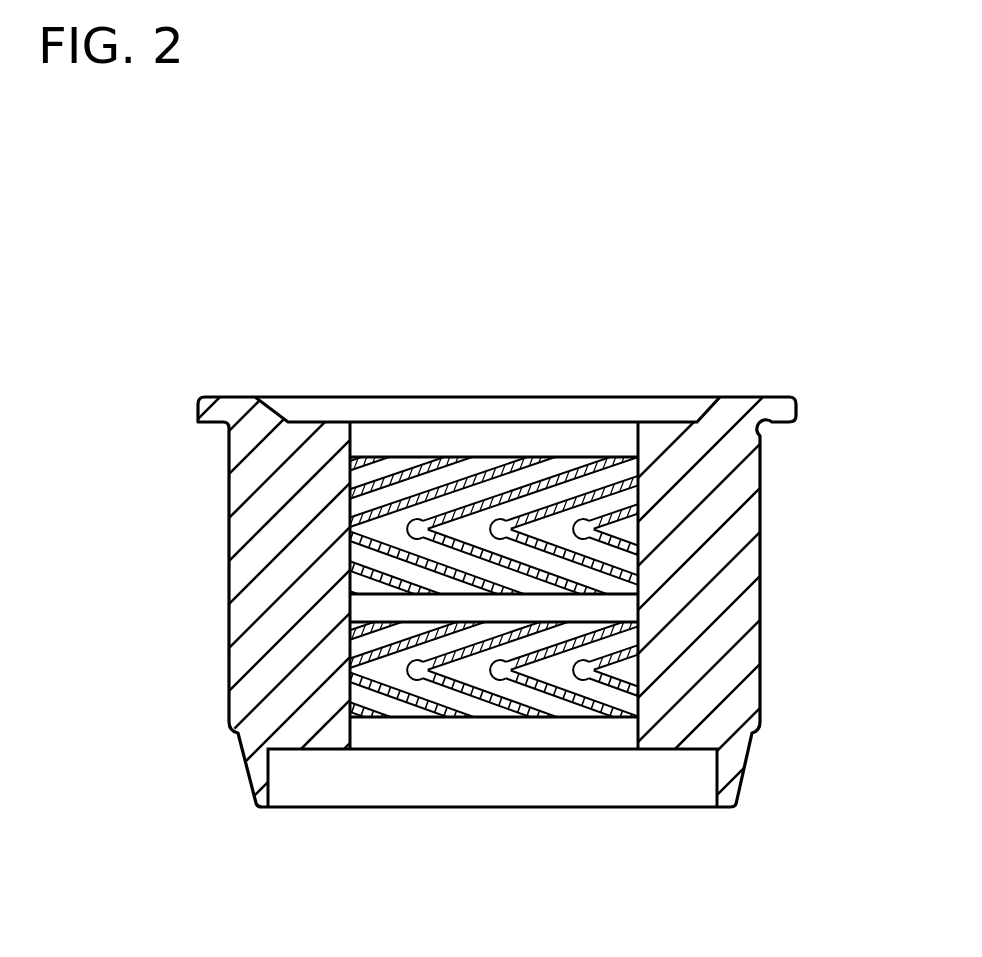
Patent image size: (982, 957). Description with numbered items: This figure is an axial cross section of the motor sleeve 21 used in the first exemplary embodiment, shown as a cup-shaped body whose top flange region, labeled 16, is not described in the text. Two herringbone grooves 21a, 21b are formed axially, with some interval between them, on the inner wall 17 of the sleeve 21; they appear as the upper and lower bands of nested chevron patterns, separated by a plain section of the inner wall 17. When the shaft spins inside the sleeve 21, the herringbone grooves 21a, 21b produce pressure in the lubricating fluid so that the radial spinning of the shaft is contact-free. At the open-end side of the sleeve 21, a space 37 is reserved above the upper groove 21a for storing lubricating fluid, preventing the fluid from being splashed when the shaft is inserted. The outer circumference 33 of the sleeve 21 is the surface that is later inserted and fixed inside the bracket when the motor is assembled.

The top plate / cover flange 16 is at (327, 393).
The space 37 is at (362, 445).
The herringbone groove 21a is at (638, 458).
The sleeve 21 is at (491, 600).
The outer circumference 33 is at (228, 590).
The inner wall 17 is at (558, 603).
The herringbone groove 21b is at (628, 691).